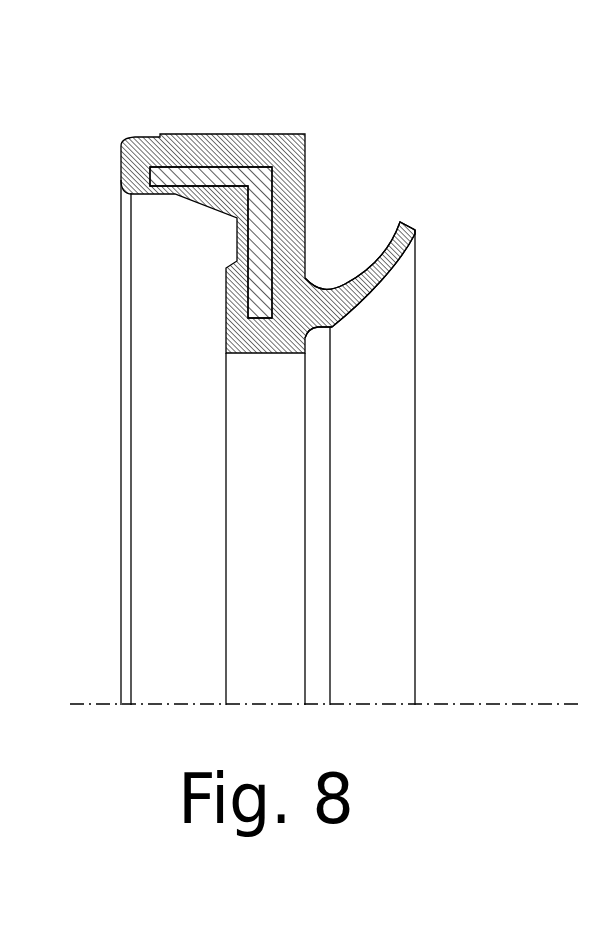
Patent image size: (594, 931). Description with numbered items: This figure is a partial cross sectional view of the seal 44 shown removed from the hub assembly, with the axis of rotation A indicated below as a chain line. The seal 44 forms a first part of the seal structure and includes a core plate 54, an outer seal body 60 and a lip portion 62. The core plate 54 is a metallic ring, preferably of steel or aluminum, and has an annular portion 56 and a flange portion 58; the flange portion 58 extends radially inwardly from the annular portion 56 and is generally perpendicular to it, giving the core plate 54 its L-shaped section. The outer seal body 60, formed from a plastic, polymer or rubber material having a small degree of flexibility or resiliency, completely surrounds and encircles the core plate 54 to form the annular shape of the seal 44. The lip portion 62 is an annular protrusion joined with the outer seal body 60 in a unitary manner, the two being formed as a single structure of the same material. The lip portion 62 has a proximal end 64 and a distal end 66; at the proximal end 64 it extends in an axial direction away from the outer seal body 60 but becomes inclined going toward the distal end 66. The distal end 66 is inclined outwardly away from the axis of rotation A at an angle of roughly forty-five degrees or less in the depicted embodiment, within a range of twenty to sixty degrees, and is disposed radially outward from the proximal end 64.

The seal 44 is at (353, 229).
The core plate 54 is at (310, 181).
The annular portion 56 is at (228, 183).
The flange portion 58 is at (260, 218).
The outer seal body 60 is at (261, 332).
The lip portion 62 is at (445, 290).
The proximal end 64 is at (311, 333).
The distal end 66 is at (398, 255).
The axis of rotation A is at (493, 705).